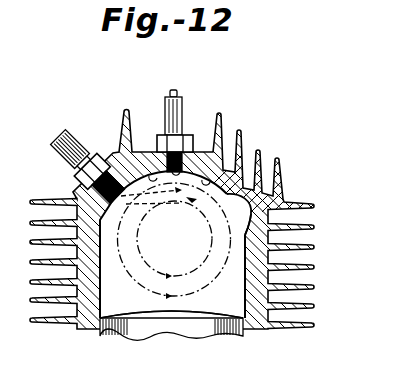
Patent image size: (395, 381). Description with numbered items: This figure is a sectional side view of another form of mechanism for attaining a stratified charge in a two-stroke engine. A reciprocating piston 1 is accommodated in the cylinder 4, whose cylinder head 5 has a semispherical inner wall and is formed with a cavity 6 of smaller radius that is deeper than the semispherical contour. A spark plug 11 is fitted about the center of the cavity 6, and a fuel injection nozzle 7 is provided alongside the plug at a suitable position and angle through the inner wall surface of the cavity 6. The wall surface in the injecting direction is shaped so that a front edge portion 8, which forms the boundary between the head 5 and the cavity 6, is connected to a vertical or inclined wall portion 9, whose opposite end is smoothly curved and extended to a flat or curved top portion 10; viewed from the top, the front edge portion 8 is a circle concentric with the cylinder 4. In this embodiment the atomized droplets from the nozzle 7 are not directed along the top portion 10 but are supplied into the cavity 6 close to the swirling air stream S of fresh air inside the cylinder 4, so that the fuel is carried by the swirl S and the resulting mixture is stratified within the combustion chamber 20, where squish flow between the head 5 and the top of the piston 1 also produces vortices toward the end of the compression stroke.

The piston 1 is at (187, 332).
The cylinder 4 is at (197, 190).
The cylinder head 5 is at (79, 204).
The cavity 6 is at (194, 179).
The injection nozzle 7 is at (87, 150).
The front edge portion 8 is at (251, 212).
The wall portion 9 is at (231, 195).
The top portion 10 is at (141, 177).
The spark plug 11 is at (186, 111).
The combustion chamber 20 is at (134, 296).
The swirling air stream S is at (213, 281).